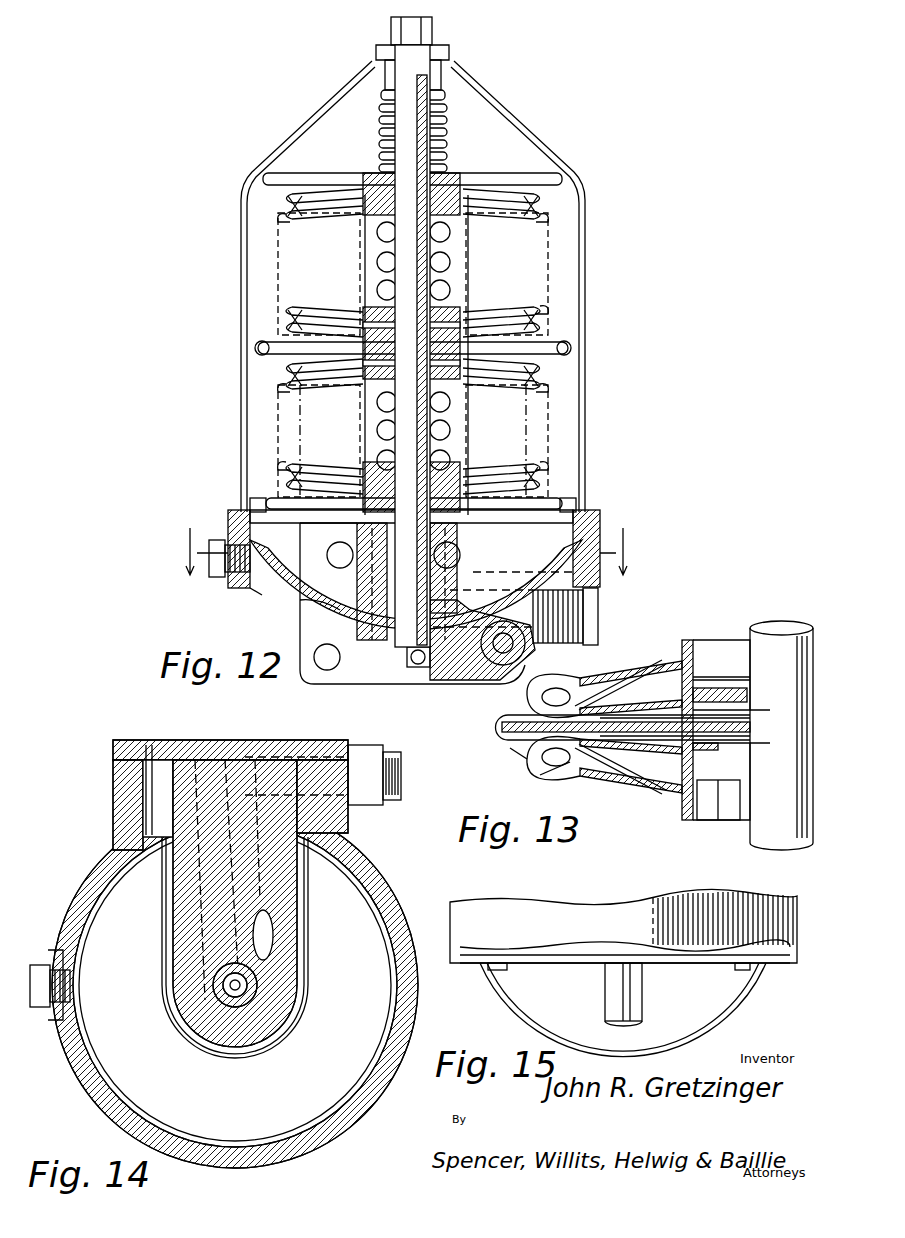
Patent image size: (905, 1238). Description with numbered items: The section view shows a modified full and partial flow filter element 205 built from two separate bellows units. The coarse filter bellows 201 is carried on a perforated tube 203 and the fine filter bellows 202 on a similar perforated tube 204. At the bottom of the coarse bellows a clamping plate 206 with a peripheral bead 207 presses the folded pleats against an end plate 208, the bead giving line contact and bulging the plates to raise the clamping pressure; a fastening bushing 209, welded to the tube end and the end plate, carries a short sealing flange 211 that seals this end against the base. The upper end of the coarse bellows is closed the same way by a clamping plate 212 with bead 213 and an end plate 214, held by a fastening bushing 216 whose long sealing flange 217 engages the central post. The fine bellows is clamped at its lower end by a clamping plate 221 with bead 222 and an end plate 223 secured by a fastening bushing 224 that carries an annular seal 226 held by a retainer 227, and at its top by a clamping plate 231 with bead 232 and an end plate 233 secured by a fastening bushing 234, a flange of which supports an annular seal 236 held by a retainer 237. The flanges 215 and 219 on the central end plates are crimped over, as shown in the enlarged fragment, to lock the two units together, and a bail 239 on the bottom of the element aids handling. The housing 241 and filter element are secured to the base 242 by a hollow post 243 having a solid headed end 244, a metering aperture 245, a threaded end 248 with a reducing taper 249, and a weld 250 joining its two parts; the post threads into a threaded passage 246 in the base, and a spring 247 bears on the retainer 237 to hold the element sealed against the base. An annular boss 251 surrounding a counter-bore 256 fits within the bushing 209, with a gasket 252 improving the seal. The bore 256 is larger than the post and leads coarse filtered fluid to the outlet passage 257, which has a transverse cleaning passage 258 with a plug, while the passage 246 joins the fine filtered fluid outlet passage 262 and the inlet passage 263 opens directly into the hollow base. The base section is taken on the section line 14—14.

In FIG. 12, the section line 14 is at (401, 551).
In FIG. 12, the coarse filter bellows 201 is at (278, 476).
In FIG. 13, the coarse filter bellows 201 is at (650, 806).
In FIG. 12, the fine filter bellows 202 is at (517, 213).
In FIG. 13, the fine filter bellows 202 is at (590, 682).
In FIG. 12, the perforated tube 203 is at (452, 445).
In FIG. 13, the perforated tube 203 is at (740, 810).
In FIG. 12, the perforated tube 204 is at (362, 250).
In FIG. 13, the perforated tube 204 is at (748, 640).
In FIG. 12, the full and partial flow filter element 205 is at (585, 354).
In FIG. 15, the full and partial flow filter element 205 is at (704, 976).
In FIG. 12, the clamping plate 206 is at (490, 490).
In FIG. 12, the peripheral bead 207 is at (535, 497).
In FIG. 12, the end plate 208 is at (262, 505).
In FIG. 12, the fastening bushing 209 is at (470, 530).
In FIG. 12, the short sealing flange 211 is at (370, 478).
In FIG. 12, the clamping plate 212 is at (285, 402).
In FIG. 13, the clamping plate 212 is at (625, 768).
In FIG. 12, the bead 213 is at (290, 376).
In FIG. 13, the bead 213 is at (545, 762).
In FIG. 12, the end plate 214 is at (540, 372).
In FIG. 13, the end plate 214 is at (510, 748).
In FIG. 12, the flange 215 is at (256, 345).
In FIG. 13, the flange 215 is at (505, 716).
In FIG. 12, the fastening bushing 216 is at (475, 378).
In FIG. 13, the fastening bushing 216 is at (682, 800).
In FIG. 12, the long sealing flange 217 is at (355, 378).
In FIG. 13, the long sealing flange 217 is at (725, 790).
In FIG. 12, the flange 219 is at (282, 332).
In FIG. 13, the flange 219 is at (500, 730).
In FIG. 12, the clamping plate 221 is at (522, 322).
In FIG. 13, the clamping plate 221 is at (660, 686).
In FIG. 12, the bead 222 is at (560, 334).
In FIG. 12, the end plate 223 is at (285, 360).
In FIG. 13, the end plate 223 is at (725, 742).
In FIG. 12, the fastening bushing 224 is at (462, 322).
In FIG. 13, the fastening bushing 224 is at (712, 678).
In FIG. 12, the annular seal 226 is at (363, 302).
In FIG. 13, the annular seal 226 is at (720, 688).
In FIG. 12, the retainer 227 is at (363, 322).
In FIG. 13, the retainer 227 is at (720, 722).
In FIG. 12, the clamping plate 231 is at (490, 185).
In FIG. 12, the bead 232 is at (530, 192).
In FIG. 12, the end plate 233 is at (290, 178).
In FIG. 12, the fastening bushing 234 is at (362, 192).
In FIG. 12, the annular seal 236 is at (358, 224).
In FIG. 12, the retainer 237 is at (380, 190).
In FIG. 12, the bail 239 is at (310, 528).
In FIG. 15, the bail 239 is at (710, 1018).
In FIG. 12, the housing 241 is at (511, 117).
In FIG. 15, the housing 241 is at (615, 910).
In FIG. 12, the base 242 is at (305, 618).
In FIG. 14, the base 242 is at (72, 905).
In FIG. 12, the hollow post 243 is at (428, 130).
In FIG. 13, the hollow post 243 is at (785, 626).
In FIG. 14, the hollow post 243 is at (258, 988).
In FIG. 15, the hollow post 243 is at (608, 1012).
In FIG. 12, the solid headed end 244 is at (432, 30).
In FIG. 12, the metering aperture 245 is at (446, 262).
In FIG. 12, the threaded passage 246 is at (405, 660).
In FIG. 14, the threaded passage 246 is at (235, 990).
In FIG. 12, the spring 247 is at (382, 110).
In FIG. 12, the threaded end 248 is at (380, 648).
In FIG. 12, the reducing taper 249 is at (385, 602).
In FIG. 12, the weld 250 is at (388, 105).
In FIG. 12, the annular boss 251 is at (341, 541).
In FIG. 12, the gasket 252 is at (375, 485).
In FIG. 12, the counter-bore 256 is at (460, 556).
In FIG. 14, the counter-bore 256 is at (213, 996).
In FIG. 12, the coarse filtered fluid outlet passage 257 is at (500, 655).
In FIG. 14, the coarse filtered fluid outlet passage 257 is at (290, 878).
In FIG. 12, the transverse cleaning passage 258 is at (555, 585).
In FIG. 14, the transverse cleaning passage 258 is at (328, 792).
In FIG. 12, the fine filtered fluid outlet passage 262 is at (405, 545).
In FIG. 14, the fine filtered fluid outlet passage 262 is at (195, 884).
In FIG. 12, the inlet passage 263 is at (300, 600).
In FIG. 14, the inlet passage 263 is at (146, 742).